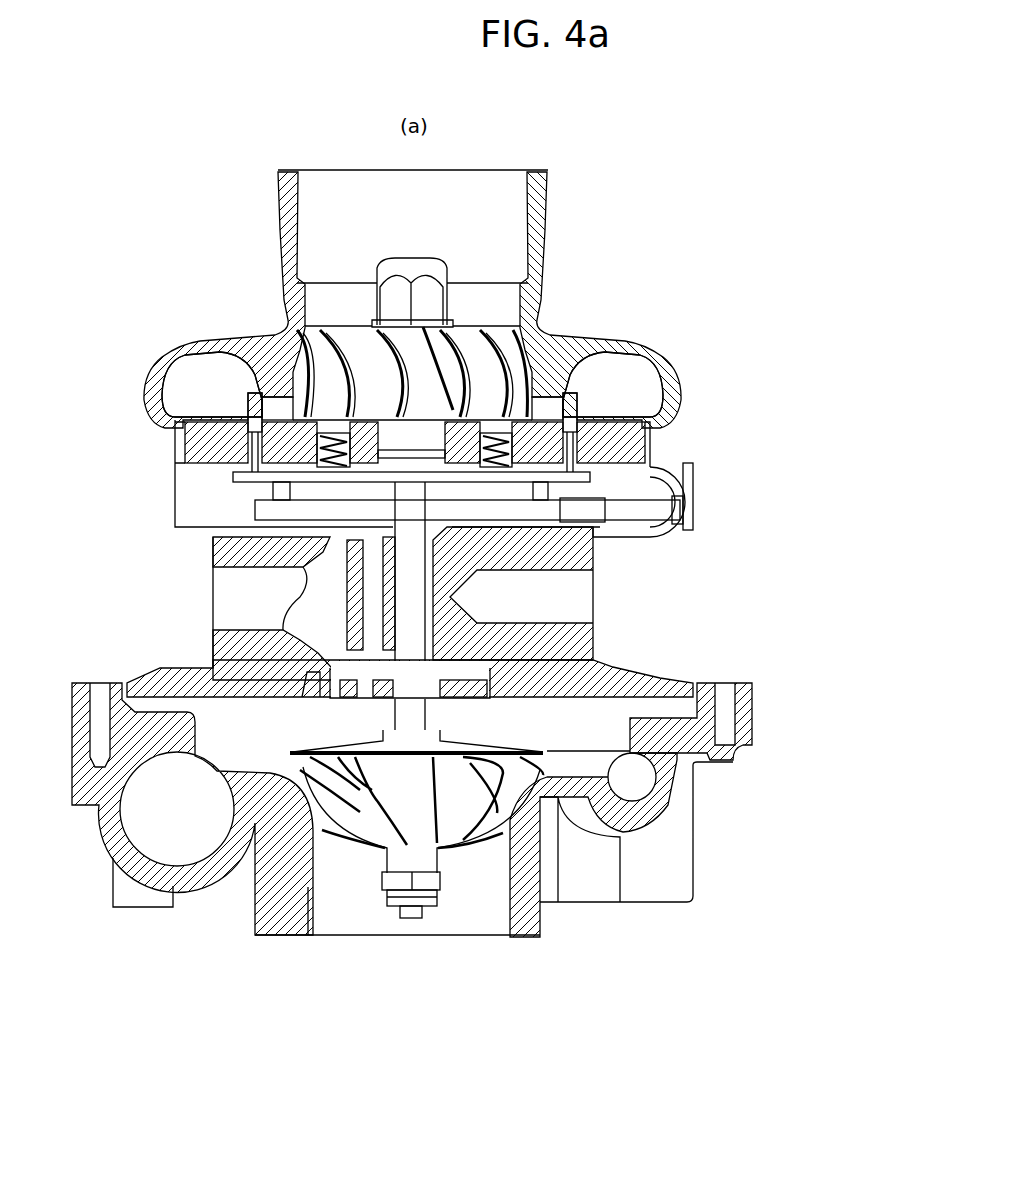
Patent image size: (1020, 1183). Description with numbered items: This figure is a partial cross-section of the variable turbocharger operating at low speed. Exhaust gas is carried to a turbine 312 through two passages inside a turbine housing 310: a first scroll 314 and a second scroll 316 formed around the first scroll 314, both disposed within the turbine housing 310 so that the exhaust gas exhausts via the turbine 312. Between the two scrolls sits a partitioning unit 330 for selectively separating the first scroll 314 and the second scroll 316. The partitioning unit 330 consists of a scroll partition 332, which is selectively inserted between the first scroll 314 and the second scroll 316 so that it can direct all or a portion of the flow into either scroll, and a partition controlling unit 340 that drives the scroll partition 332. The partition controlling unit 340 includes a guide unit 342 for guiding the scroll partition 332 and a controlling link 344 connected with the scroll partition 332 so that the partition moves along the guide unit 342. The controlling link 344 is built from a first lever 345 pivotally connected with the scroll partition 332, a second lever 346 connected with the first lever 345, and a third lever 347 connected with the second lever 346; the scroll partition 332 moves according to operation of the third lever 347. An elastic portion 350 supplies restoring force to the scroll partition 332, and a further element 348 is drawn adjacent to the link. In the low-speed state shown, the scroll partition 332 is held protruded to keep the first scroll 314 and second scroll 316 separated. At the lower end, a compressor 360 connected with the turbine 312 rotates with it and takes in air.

The turbine housing 310 is at (652, 350).
The turbine 312 is at (505, 327).
The first scroll 314 is at (277, 407).
The second scroll 316 is at (193, 390).
The partitioning unit 330 is at (877, 443).
The scroll partition 332 is at (218, 435).
The partition controlling unit 340 is at (830, 482).
The guide unit 342 is at (693, 472).
The controlling link 344 is at (780, 520).
The first lever 345 is at (600, 508).
The second lever 346 is at (600, 512).
The third lever 347 is at (684, 518).
The clip 348 is at (272, 488).
The elastic portion 350 is at (292, 483).
The compressor 360 is at (447, 905).